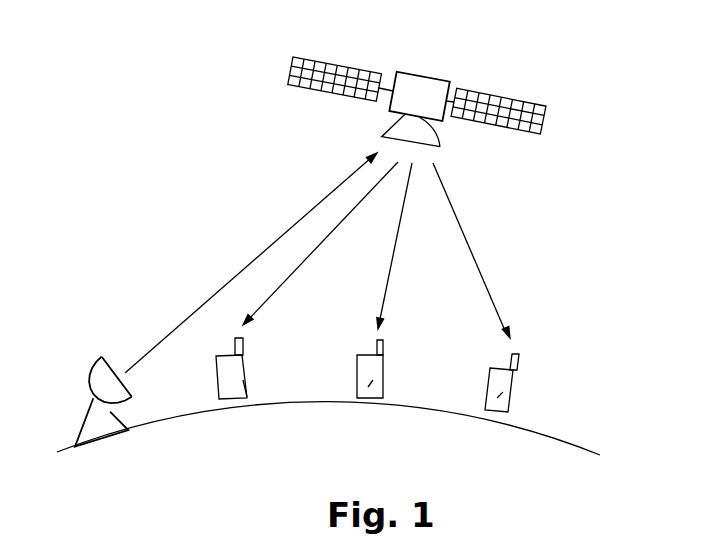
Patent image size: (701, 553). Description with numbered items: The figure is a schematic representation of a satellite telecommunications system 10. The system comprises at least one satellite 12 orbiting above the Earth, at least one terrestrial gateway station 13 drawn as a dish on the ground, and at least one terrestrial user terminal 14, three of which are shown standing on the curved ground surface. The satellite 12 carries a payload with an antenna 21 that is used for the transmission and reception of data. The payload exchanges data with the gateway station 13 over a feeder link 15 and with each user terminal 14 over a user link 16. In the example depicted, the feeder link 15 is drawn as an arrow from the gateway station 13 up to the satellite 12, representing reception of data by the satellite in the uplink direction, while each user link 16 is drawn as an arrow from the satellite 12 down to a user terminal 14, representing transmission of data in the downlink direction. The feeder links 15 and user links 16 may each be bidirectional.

The satellite telecommunications system 10 is at (184, 144).
The satellite 12 is at (470, 90).
The terrestrial gateway station 13 is at (87, 368).
The terrestrial user terminal 14 is at (237, 398).
The feeder link 15 is at (207, 297).
The user link 16 is at (302, 267).
The antenna 21 is at (440, 147).